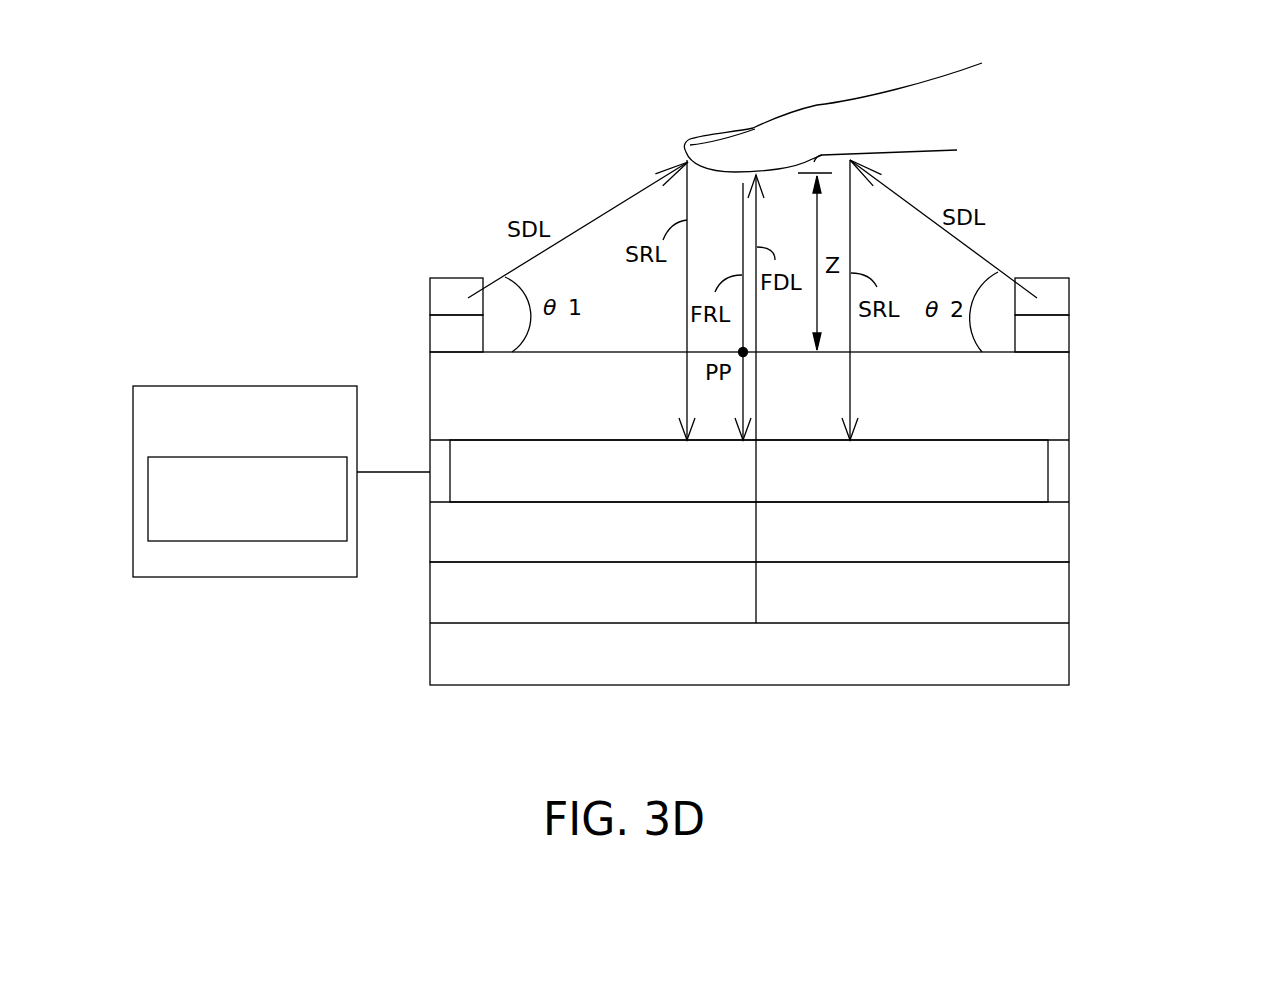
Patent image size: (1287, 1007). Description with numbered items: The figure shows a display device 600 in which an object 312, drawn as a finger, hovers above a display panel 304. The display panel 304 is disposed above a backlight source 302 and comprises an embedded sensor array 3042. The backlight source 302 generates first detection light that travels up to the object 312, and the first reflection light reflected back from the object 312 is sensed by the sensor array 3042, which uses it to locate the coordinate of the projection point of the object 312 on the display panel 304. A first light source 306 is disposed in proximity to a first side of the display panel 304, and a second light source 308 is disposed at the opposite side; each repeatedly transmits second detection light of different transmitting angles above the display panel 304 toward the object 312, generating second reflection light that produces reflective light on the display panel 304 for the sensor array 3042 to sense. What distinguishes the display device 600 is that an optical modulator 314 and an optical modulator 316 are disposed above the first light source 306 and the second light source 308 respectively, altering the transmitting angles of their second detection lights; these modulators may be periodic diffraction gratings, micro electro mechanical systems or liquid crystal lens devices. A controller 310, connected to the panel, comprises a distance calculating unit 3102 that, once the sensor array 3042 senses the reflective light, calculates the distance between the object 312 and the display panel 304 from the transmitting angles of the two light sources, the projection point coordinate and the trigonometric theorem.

The display device 600 is at (1113, 115).
The object 312 is at (933, 125).
The optical modulator 314 is at (445, 297).
The first light source 306 is at (440, 338).
The optical modulator 316 is at (1050, 297).
The second light source 308 is at (1058, 332).
The display panel 304 is at (1137, 352).
The sensor array 3042 is at (1030, 478).
The backlight source 302 is at (1030, 658).
The controller 310 is at (170, 386).
The distance calculating unit 3102 is at (245, 541).